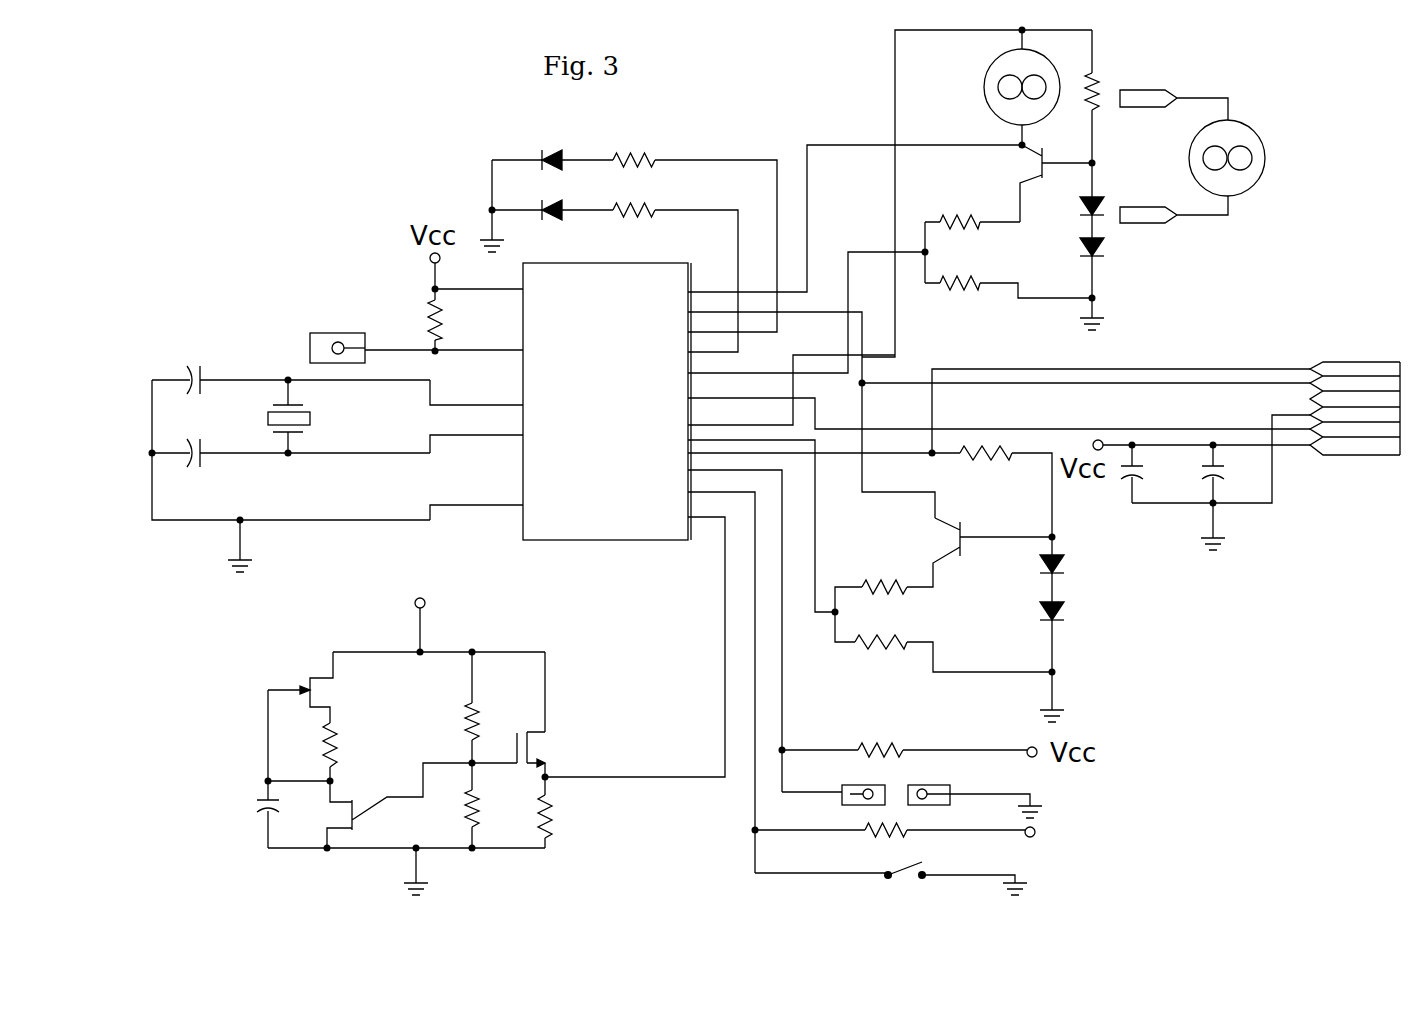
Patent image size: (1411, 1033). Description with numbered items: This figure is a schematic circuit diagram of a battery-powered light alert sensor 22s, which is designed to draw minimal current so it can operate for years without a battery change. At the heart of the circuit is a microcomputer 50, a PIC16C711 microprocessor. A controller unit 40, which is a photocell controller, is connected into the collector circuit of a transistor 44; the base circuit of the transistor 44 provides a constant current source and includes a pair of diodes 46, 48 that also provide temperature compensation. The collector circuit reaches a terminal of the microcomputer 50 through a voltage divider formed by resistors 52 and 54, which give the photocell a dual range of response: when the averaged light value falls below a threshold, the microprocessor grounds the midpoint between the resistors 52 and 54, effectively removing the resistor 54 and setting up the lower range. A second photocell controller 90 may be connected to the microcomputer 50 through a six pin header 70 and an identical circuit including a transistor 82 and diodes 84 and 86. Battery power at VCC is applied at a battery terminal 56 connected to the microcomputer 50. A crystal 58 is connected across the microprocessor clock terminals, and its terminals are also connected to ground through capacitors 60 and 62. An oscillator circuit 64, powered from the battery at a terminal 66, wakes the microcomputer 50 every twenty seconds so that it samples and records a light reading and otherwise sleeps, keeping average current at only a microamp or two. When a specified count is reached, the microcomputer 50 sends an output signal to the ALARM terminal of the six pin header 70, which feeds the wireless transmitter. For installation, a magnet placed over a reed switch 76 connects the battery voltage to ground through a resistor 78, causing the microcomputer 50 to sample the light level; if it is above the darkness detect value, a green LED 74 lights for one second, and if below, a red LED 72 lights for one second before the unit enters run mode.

The light alert sensor 22s is at (803, 157).
The controller unit 40 is at (986, 78).
The transistor 44 is at (1045, 150).
The diode 46 is at (1096, 198).
The diode 48 is at (1097, 255).
The microcomputer 50 is at (621, 423).
The resistor 52 is at (945, 212).
The resistor 54 is at (962, 292).
The battery terminal 56 is at (428, 287).
The crystal 58 is at (312, 420).
The capacitor 60 is at (208, 372).
The capacitor 62 is at (208, 460).
The oscillator circuit 64 is at (415, 728).
The terminal 66 is at (413, 623).
The six pin header 70 is at (1357, 452).
The red LED 72 is at (560, 155).
The green LED 74 is at (562, 212).
The reed switch 76 is at (905, 876).
The resistor 78 is at (875, 838).
The transistor 82 is at (963, 530).
The diode 84 is at (1065, 567).
The diode 86 is at (1060, 625).
The second photocell controller 90 is at (1243, 196).